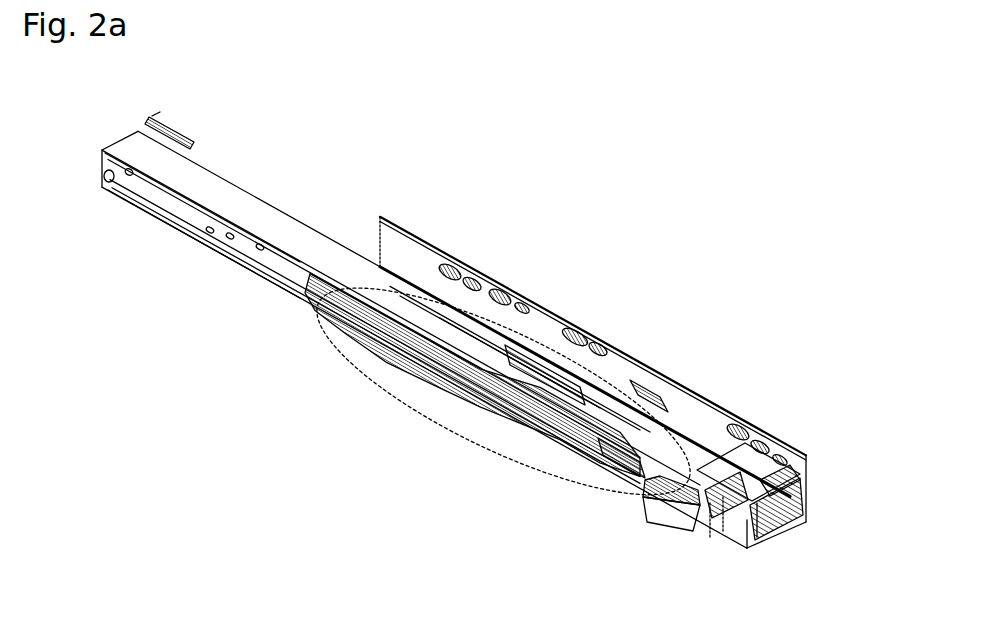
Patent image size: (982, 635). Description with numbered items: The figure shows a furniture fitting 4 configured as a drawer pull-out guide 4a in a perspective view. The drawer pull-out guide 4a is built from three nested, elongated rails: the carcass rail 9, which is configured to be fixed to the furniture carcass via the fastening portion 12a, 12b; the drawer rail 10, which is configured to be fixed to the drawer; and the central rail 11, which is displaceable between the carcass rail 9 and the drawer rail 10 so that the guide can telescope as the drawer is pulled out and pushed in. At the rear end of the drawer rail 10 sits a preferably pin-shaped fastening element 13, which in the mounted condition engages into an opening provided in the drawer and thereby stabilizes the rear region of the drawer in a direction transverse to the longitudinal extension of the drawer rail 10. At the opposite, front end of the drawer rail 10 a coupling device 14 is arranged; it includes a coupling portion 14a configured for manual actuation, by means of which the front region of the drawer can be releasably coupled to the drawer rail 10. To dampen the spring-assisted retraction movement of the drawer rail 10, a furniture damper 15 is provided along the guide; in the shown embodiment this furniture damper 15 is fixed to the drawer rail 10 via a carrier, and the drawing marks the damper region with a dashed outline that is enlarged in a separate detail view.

The furniture fitting 4 is at (492, 364).
The drawer pull-out guide 4a is at (630, 316).
The carcass rail 9 is at (785, 540).
The drawer rail 10 is at (256, 213).
The central rail 11 is at (233, 267).
The fastening portion 12a is at (631, 357).
The fastening portion 12b is at (700, 394).
The fastening element 13 is at (183, 146).
The coupling device 14 is at (669, 528).
The coupling portion 14a is at (667, 527).
The furniture damper 15 is at (435, 440).